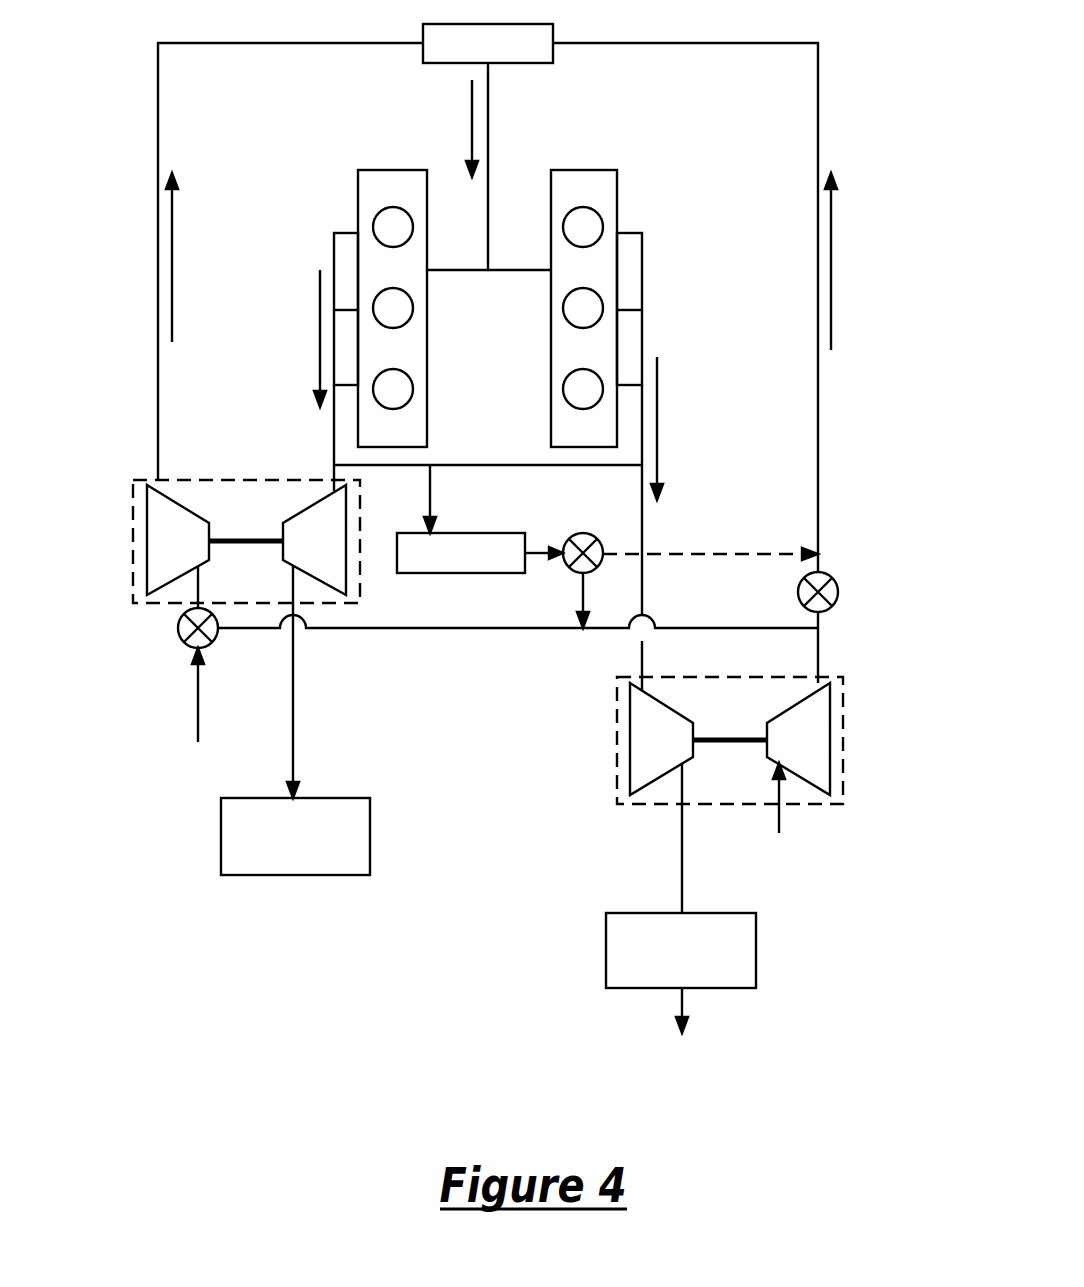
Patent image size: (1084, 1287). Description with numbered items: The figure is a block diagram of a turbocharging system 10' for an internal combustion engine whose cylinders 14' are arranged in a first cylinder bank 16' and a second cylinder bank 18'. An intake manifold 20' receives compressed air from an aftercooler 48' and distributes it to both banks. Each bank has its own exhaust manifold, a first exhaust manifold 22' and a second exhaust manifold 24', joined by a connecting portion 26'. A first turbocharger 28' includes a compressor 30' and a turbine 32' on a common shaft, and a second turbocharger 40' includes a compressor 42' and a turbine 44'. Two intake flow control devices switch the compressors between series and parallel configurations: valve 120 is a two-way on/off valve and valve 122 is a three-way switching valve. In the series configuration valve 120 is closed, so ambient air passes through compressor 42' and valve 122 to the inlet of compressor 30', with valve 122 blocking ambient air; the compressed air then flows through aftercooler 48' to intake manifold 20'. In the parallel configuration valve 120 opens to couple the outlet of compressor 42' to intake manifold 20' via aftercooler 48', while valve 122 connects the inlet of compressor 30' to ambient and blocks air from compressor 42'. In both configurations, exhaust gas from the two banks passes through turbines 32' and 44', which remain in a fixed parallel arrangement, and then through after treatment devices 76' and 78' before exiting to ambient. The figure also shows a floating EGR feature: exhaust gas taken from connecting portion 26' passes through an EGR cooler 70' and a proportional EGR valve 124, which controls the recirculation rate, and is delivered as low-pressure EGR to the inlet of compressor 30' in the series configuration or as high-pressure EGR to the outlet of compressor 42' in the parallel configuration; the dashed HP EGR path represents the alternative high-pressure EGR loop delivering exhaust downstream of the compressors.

The system 10' is at (561, 363).
The cylinders 14' is at (338, 212).
The first cylinder bank 16' is at (392, 263).
The second cylinder bank 18' is at (548, 277).
The intake manifold 20' is at (524, 166).
The first exhaust manifold 22' is at (292, 362).
The second exhaust manifold 24' is at (687, 462).
The connecting portion 26' is at (488, 457).
The first turbocharger 28' is at (246, 488).
The compressor 30' is at (122, 546).
The turbine 32' is at (367, 641).
The second turbocharger 40' is at (793, 732).
The compressor 42' is at (849, 775).
The turbine 44' is at (604, 798).
The aftercooler 48' is at (537, 100).
The EGR cooler 70' is at (479, 574).
The after treatment device 76' is at (348, 836).
The after treatment device 78' is at (737, 989).
The intake flow control device 120 is at (838, 585).
The intake flow control device 122 is at (178, 625).
The EGR valve 124 is at (567, 572).